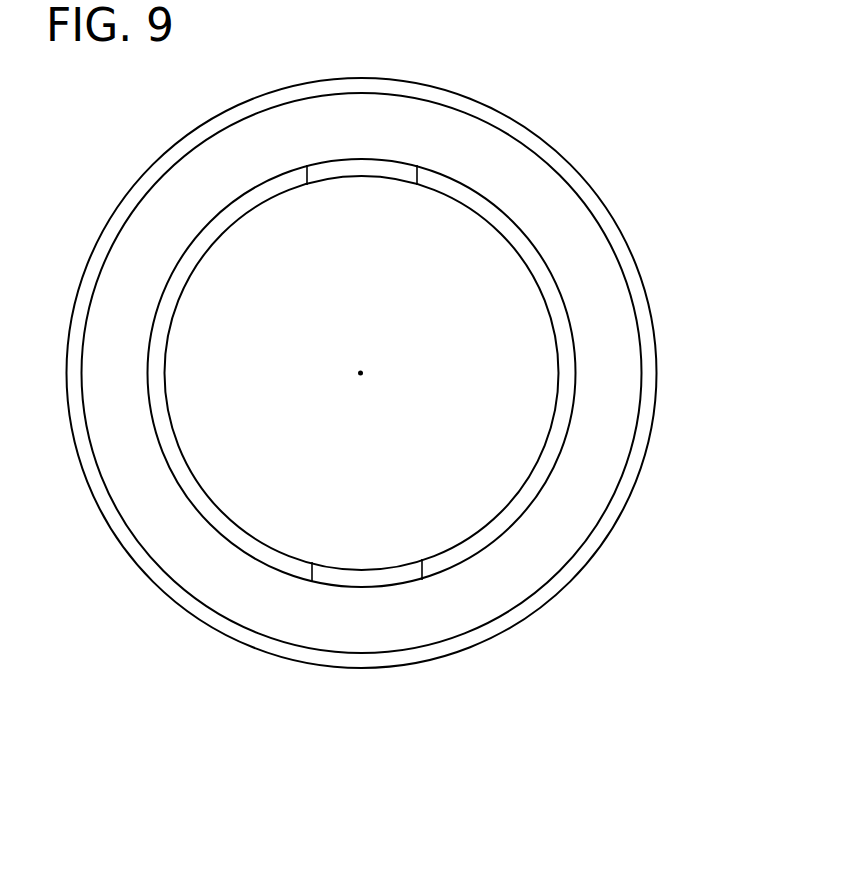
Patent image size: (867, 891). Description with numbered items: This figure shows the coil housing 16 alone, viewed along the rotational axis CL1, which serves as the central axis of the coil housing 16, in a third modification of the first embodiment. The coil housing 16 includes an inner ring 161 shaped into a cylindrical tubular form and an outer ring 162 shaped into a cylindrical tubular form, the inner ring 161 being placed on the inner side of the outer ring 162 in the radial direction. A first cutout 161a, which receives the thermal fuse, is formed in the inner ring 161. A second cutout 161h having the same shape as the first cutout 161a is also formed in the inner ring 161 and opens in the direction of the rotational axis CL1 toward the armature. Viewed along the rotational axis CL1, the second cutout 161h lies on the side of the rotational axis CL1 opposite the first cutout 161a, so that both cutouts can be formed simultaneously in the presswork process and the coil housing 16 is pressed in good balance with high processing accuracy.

The coil housing 16 is at (388, 376).
The outer ring 162 is at (622, 247).
The inner ring 161 is at (550, 448).
The first cutout 161a is at (367, 170).
The second cutout 161h is at (372, 577).
The rotational axis CL1 is at (360, 373).